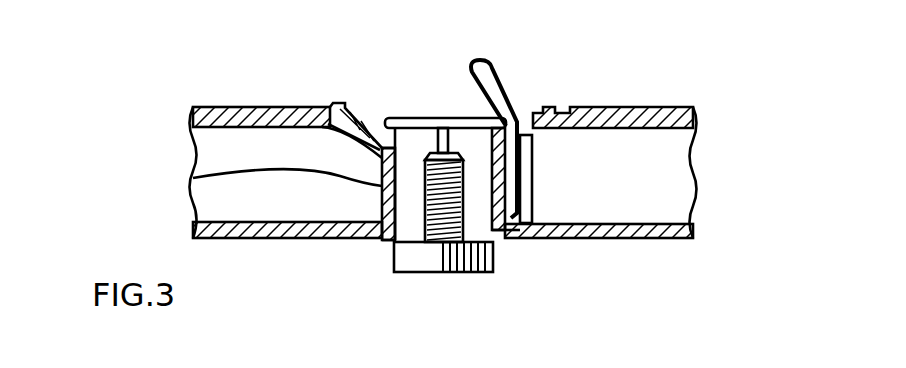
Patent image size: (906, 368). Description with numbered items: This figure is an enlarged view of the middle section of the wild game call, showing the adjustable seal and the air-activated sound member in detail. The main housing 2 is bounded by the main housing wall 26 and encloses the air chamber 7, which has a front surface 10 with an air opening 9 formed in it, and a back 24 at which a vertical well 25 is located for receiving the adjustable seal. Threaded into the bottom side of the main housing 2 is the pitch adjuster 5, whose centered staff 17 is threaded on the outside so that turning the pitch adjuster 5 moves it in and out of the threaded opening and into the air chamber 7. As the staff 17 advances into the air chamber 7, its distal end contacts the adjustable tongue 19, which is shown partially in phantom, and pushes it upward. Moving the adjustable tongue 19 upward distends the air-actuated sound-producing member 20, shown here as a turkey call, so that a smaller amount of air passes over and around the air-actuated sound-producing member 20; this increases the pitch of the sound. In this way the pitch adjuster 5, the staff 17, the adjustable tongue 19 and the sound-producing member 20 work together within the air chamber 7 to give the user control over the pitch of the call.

The main housing 2 is at (649, 170).
The pitch adjuster 5 is at (430, 272).
The air chamber 7 is at (193, 178).
The air opening 9 is at (387, 218).
The front surface 10 is at (325, 111).
The centered staff 17 is at (418, 223).
The adjustable tongue 19 is at (380, 126).
The air-actuated sound-producing member 20 is at (402, 118).
The back 24 is at (500, 233).
The vertical well 25 is at (513, 217).
The main housing wall 26 is at (633, 107).